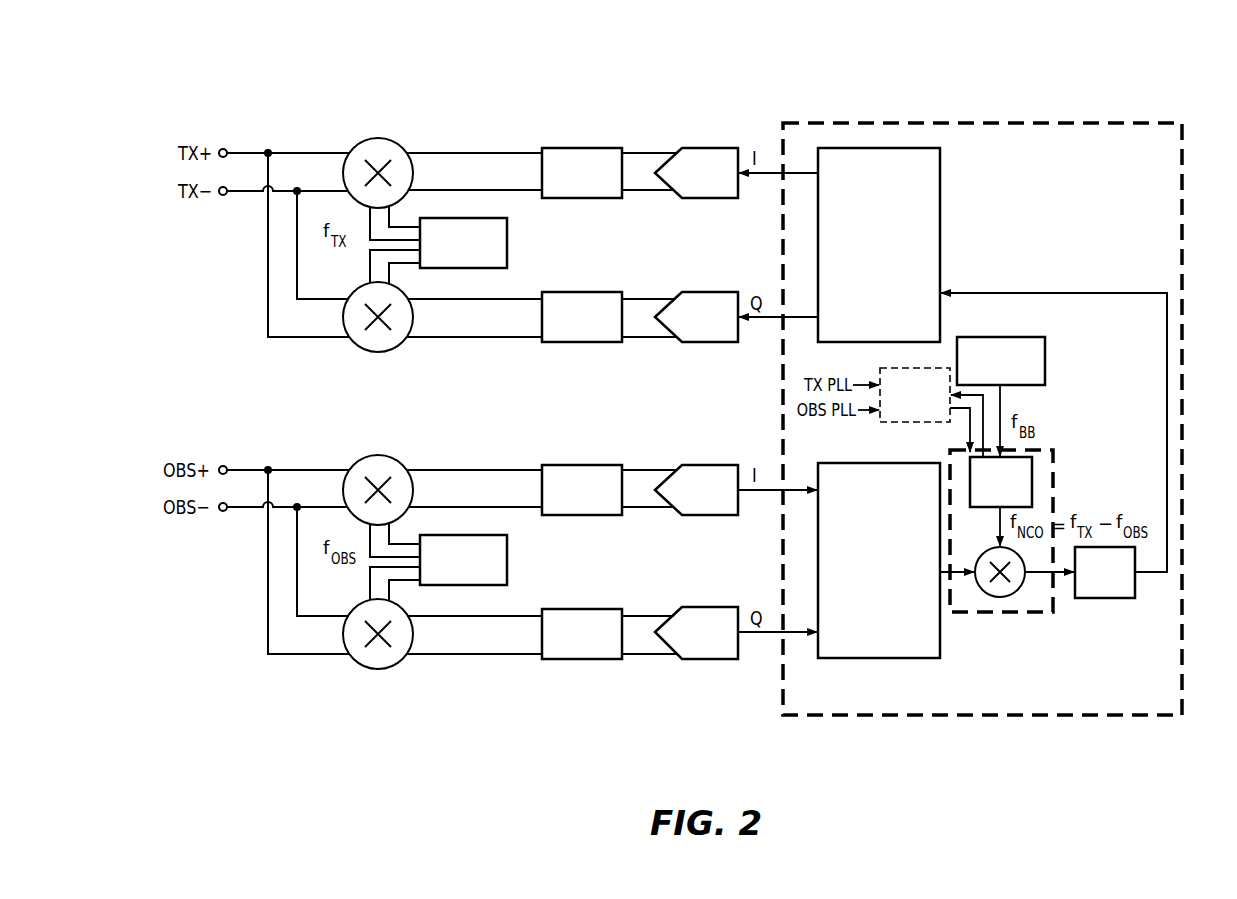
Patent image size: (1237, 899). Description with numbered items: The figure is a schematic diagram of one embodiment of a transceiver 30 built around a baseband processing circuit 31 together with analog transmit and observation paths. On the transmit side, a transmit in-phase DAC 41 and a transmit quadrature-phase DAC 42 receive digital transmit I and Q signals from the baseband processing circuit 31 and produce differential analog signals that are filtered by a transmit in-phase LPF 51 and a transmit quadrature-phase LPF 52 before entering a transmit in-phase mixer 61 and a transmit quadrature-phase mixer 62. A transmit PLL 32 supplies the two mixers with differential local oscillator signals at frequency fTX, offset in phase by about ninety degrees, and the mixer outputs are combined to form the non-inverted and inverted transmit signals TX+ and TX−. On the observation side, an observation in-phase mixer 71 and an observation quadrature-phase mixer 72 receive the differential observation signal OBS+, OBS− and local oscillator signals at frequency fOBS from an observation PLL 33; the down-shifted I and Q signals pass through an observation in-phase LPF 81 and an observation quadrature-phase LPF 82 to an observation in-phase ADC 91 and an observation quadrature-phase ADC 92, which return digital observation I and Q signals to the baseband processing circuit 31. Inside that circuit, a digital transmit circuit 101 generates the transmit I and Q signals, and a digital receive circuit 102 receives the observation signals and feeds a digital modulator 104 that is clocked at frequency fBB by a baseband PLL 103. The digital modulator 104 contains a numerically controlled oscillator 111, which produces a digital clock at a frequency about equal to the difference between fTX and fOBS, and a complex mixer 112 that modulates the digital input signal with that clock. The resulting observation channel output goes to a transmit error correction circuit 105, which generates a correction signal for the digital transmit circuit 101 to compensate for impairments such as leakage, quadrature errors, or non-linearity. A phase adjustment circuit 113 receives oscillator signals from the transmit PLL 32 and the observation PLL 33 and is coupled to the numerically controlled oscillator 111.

The transceiver 30 is at (1101, 66).
The baseband processing circuit 31 is at (965, 123).
The transmit phase-locked loop 32 is at (507, 245).
The observation PLL 33 is at (507, 562).
The transmit in-phase digital-to-analog converter 41 is at (707, 148).
The transmit quadrature-phase DAC 42 is at (705, 342).
The transmit in-phase low pass filter 51 is at (580, 148).
The transmit quadrature-phase LPF 52 is at (578, 342).
The transmit in-phase mixer 61 is at (386, 139).
The transmit quadrature-phase mixer 62 is at (383, 351).
The observation in-phase mixer 71 is at (386, 456).
The observation quadrature-phase mixer 72 is at (383, 668).
The observation in-phase LPF 81 is at (580, 465).
The observation quadrature-phase LPF 82 is at (578, 659).
The observation in-phase analog-to-digital converter 91 is at (707, 465).
The observation quadrature-phase ADC 92 is at (705, 659).
The digital transmit circuit 101 is at (940, 232).
The digital receive circuit 102 is at (870, 463).
The baseband PLL 103 is at (1045, 362).
The digital modulator 104 is at (1003, 612).
The transmit error correction circuit 105 is at (1110, 598).
The numerically controlled oscillator 111 is at (1032, 482).
The complex mixer 112 is at (1018, 589).
The phase adjustment circuit 113 is at (893, 368).